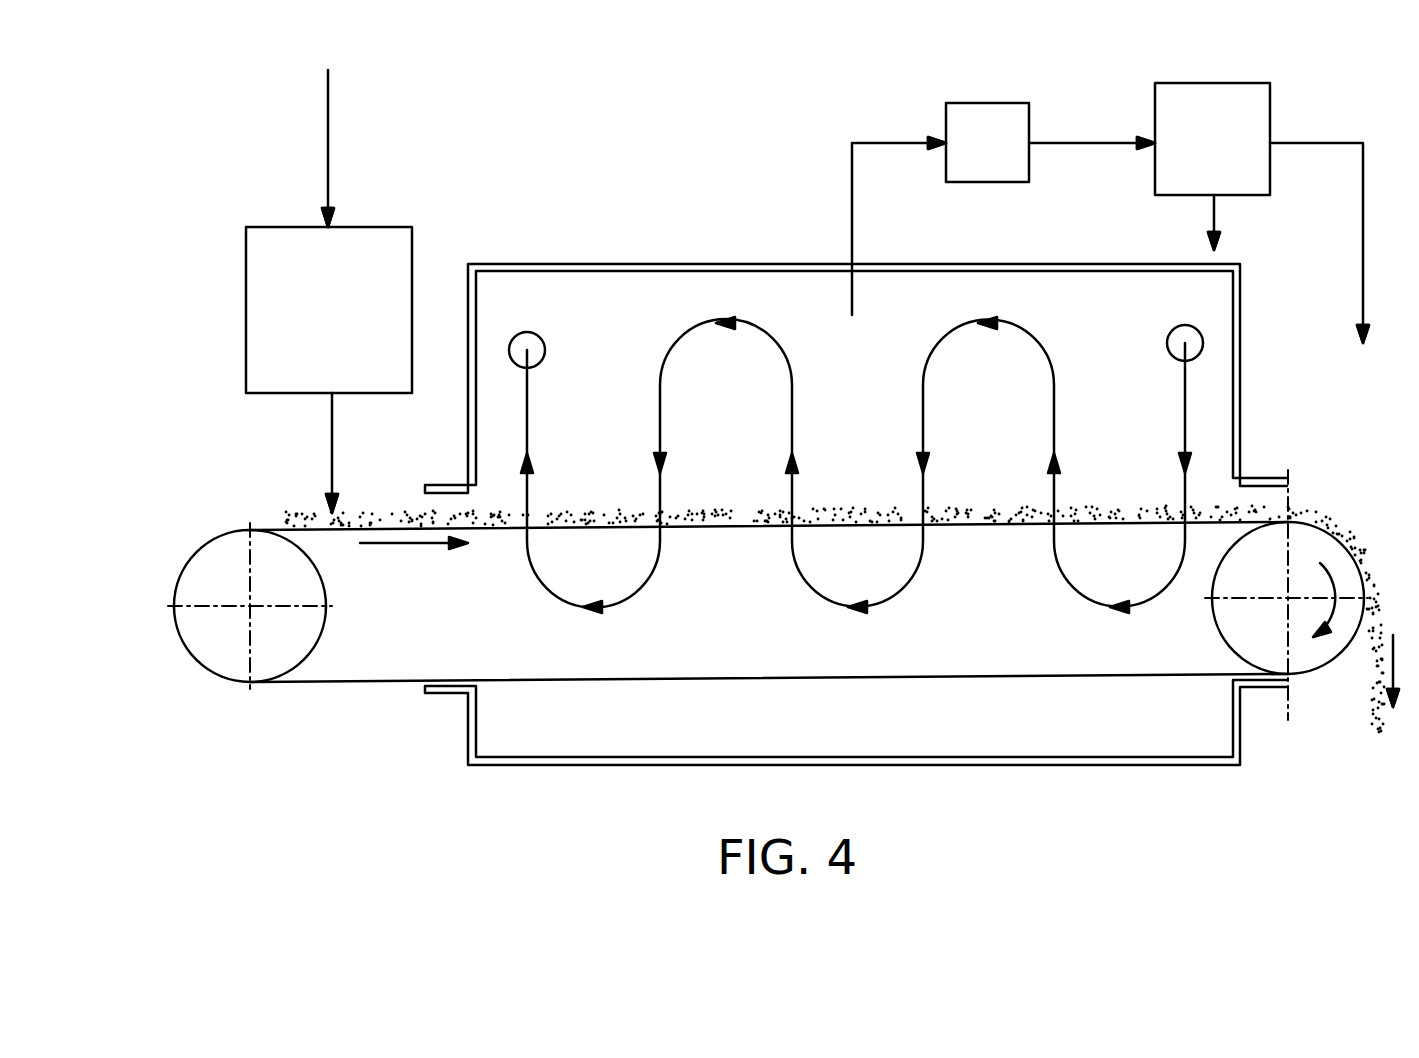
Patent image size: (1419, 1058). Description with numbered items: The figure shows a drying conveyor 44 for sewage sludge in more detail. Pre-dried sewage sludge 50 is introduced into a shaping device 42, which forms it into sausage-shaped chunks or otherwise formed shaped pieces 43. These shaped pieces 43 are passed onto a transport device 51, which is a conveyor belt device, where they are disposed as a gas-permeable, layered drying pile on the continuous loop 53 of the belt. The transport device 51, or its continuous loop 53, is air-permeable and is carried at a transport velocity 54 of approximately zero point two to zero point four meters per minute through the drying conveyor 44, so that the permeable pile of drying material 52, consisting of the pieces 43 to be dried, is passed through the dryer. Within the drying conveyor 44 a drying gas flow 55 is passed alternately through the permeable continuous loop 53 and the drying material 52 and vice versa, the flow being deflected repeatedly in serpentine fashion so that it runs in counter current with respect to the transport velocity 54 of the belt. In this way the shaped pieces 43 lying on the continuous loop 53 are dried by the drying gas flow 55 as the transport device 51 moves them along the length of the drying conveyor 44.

The shaping device 42 is at (363, 265).
The shaped pieces 43 is at (332, 435).
The drying conveyor 44 is at (947, 618).
The pre-dried sewage sludge 50 is at (328, 148).
The transport device 51 is at (395, 610).
The drying material 52 is at (828, 510).
The continuous loop 53 is at (742, 527).
The transport velocity 54 is at (417, 545).
The drying gas flow 55 is at (1185, 393).